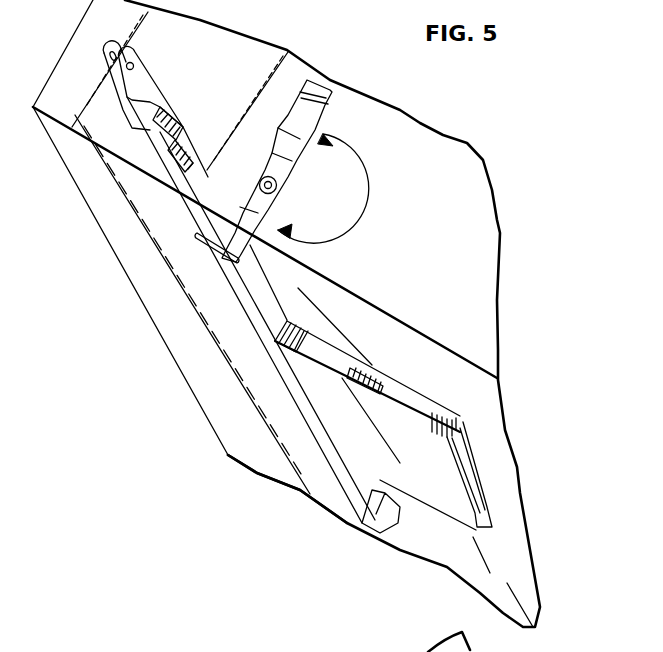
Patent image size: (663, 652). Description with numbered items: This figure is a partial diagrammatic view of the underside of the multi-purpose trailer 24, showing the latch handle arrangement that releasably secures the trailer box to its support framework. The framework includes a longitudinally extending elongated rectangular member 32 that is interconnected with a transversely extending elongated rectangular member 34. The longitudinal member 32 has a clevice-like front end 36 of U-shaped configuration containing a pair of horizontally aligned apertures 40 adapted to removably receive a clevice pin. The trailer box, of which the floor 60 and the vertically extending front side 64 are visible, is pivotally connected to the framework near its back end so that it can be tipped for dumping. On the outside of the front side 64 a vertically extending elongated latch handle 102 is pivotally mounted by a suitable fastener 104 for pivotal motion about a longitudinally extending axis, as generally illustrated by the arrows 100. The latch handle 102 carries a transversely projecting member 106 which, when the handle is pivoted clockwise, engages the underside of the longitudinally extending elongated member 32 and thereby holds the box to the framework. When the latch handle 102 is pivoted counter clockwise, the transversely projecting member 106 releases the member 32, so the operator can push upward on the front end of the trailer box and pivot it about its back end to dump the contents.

The multi-purpose trailer 24 is at (483, 172).
The longitudinally extending elongated rectangular member 32 is at (191, 203).
The transversely extending elongated rectangular member 34 is at (405, 398).
The clevice-like front end 36 is at (143, 80).
The aperture 40 is at (134, 63).
The floor 60 is at (260, 447).
The front side 64 is at (472, 293).
The arrows 100 is at (354, 213).
The latch handle 102 is at (318, 115).
The fastener 104 is at (259, 185).
The transversely projecting member 106 is at (226, 255).